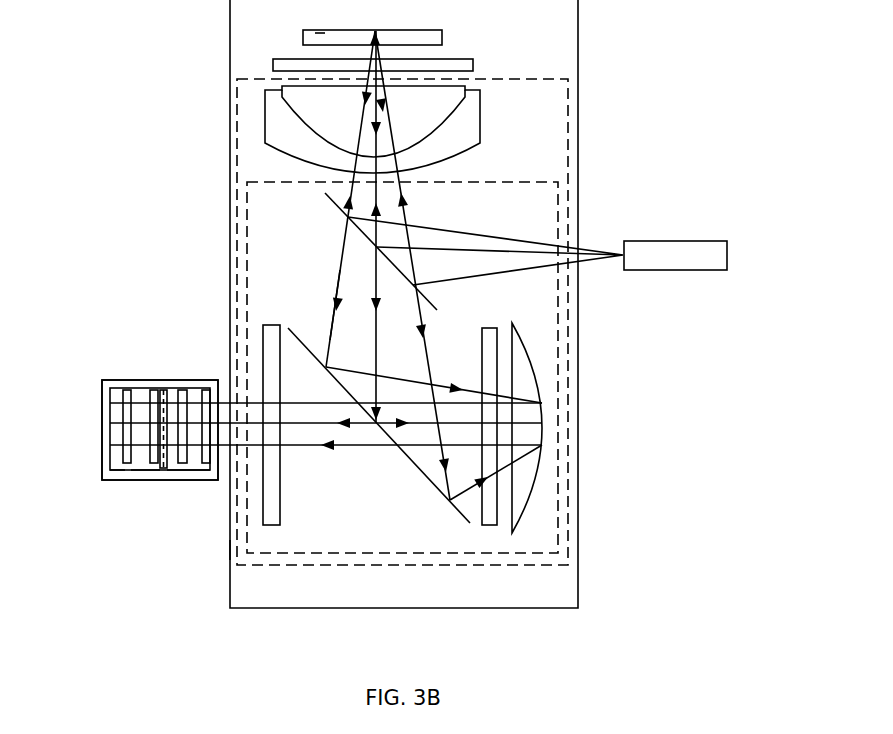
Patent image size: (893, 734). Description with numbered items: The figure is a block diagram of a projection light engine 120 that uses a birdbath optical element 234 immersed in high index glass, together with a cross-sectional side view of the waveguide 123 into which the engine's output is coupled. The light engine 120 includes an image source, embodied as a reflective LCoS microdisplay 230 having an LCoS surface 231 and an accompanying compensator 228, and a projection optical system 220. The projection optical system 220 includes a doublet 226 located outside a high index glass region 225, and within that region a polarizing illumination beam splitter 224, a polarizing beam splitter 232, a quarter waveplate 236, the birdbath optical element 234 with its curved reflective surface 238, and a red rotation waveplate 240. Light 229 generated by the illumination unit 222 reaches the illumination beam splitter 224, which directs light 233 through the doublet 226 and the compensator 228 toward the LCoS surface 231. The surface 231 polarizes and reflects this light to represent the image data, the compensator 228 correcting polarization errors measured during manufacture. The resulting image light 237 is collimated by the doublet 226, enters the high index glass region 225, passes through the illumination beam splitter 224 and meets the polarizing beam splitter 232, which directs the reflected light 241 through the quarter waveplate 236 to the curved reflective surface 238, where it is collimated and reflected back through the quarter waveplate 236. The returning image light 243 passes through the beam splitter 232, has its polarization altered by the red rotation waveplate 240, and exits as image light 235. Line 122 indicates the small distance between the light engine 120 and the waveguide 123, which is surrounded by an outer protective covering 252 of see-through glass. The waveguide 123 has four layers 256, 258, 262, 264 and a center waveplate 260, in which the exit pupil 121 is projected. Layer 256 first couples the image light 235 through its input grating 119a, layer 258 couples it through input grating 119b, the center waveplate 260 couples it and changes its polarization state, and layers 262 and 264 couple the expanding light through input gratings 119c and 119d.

The projection light engine 120 is at (578, 43).
The line indicating distance 122 is at (223, 552).
The waveguide 123 is at (98, 423).
The optical input grating 119a is at (207, 390).
The optical input grating 119b is at (182, 392).
The optical input grating 119c is at (152, 390).
The optical input grating 119d is at (125, 390).
The exit pupil 121 is at (165, 473).
The projection optical system 220 is at (569, 140).
The illumination unit 222 is at (712, 240).
The polarizing illumination beam splitter 224 is at (333, 199).
The high index glass region 225 is at (558, 217).
The doublet 226 is at (480, 125).
The compensator 228 is at (473, 63).
The light 229 is at (605, 262).
The microdisplay 230 is at (402, 30).
The LCoS surface 231 is at (325, 33).
The polarizing beam splitter 232 is at (295, 330).
The light 233 is at (400, 222).
The birdbath optical element 234 is at (537, 347).
The image light 235 is at (255, 403).
The quarter waveplate 236 is at (490, 367).
The image light 237 is at (337, 318).
The curved reflective surface 238 is at (528, 345).
The red rotation waveplate 240 is at (270, 515).
The reflected light 241 is at (467, 492).
The image light 243 is at (417, 448).
The outer protective covering 252 is at (107, 452).
The layer 256 is at (208, 470).
The layer 258 is at (182, 467).
The center waveplate 260 is at (158, 472).
The layer 262 is at (140, 467).
The layer 264 is at (117, 463).